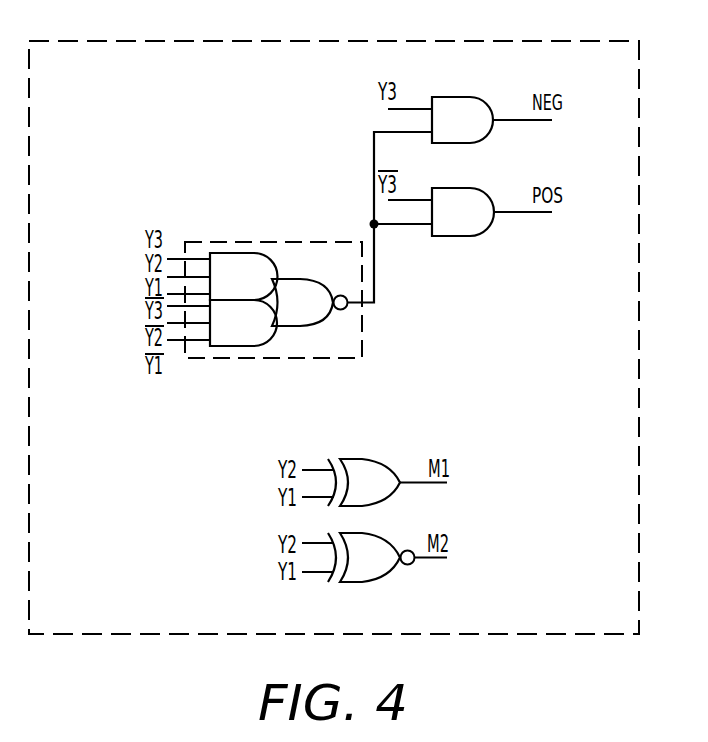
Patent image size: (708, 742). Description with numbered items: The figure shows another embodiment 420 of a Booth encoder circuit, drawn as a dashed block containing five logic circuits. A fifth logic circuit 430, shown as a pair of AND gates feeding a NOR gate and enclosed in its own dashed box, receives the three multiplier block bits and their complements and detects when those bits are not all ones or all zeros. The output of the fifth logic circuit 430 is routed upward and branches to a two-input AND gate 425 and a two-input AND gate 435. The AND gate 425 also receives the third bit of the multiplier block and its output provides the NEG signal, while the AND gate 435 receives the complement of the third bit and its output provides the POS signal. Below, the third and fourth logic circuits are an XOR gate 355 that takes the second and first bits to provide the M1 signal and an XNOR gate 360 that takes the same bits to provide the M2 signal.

The Booth encoder circuit embodiment 420 is at (623, 40).
The fifth logic circuit 430 is at (272, 241).
The two-input AND gate 425 is at (465, 96).
The two-input AND gate 435 is at (465, 188).
The XOR gate 355 is at (371, 459).
The XNOR gate 360 is at (371, 533).